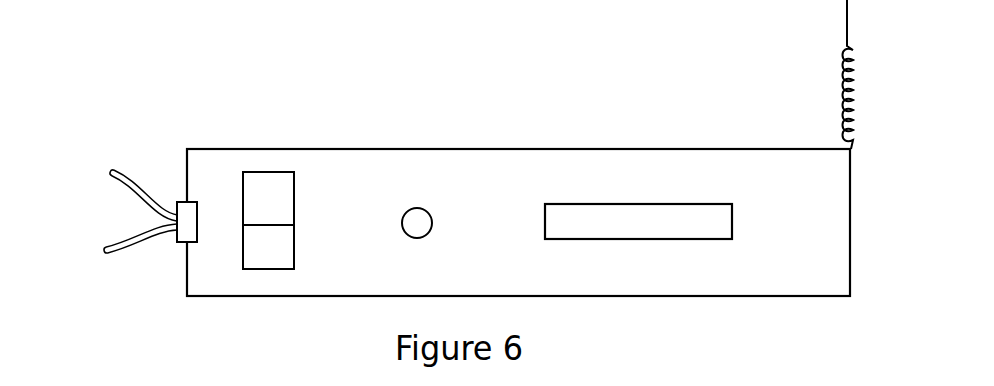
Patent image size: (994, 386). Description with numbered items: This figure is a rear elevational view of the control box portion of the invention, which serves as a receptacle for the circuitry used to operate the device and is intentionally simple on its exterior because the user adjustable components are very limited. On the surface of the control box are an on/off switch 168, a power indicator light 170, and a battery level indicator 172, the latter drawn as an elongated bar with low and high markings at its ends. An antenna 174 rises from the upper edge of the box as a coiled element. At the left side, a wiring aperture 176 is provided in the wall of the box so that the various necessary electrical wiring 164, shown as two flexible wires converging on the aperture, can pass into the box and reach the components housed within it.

The electrical wiring 164 is at (112, 240).
The wiring aperture 176 is at (192, 203).
The on/off switch 168 is at (280, 245).
The power indicator light 170 is at (420, 223).
The battery level indicator 172 is at (672, 223).
The antenna 174 is at (857, 90).